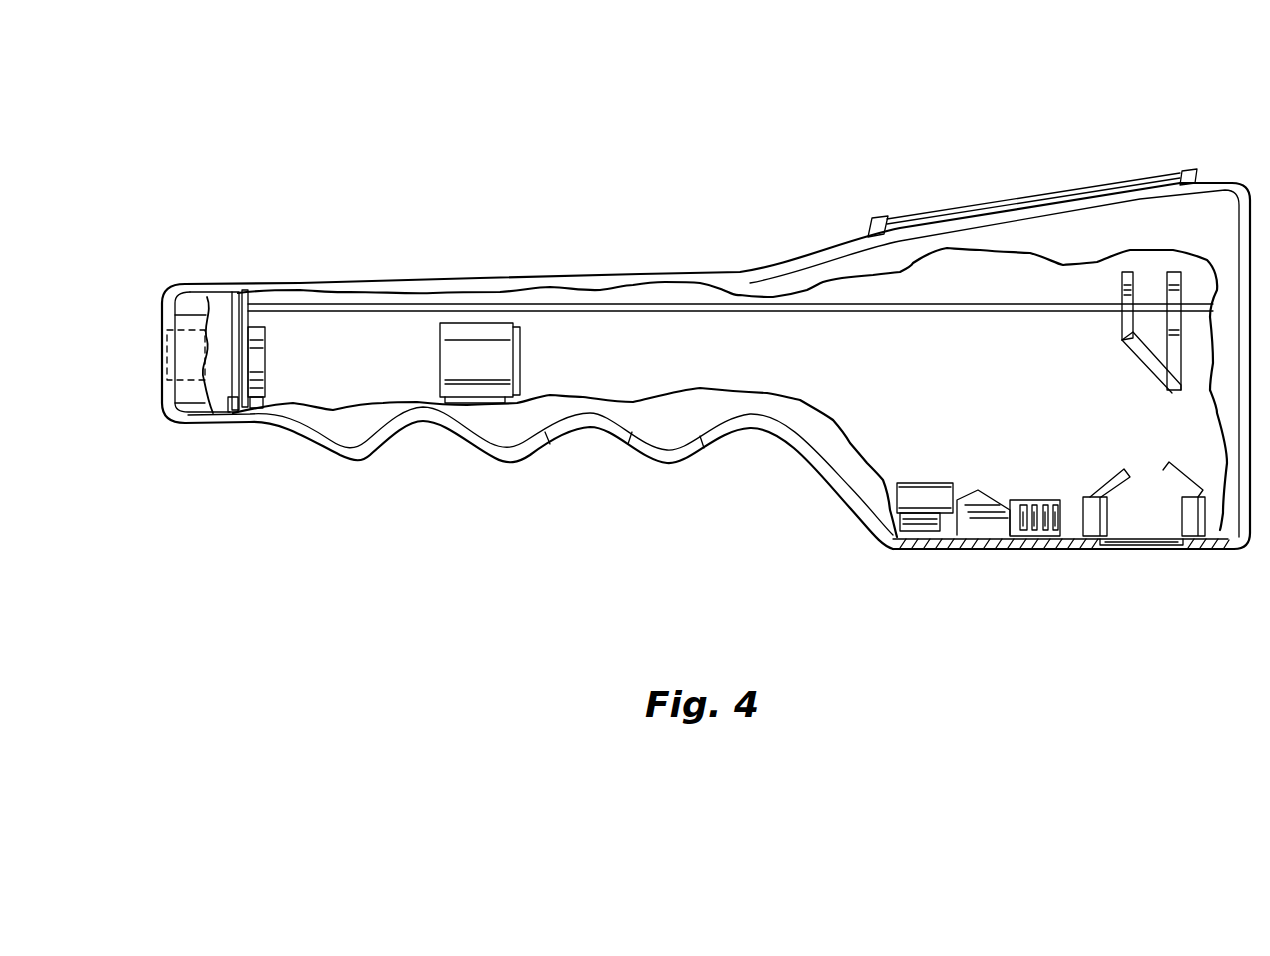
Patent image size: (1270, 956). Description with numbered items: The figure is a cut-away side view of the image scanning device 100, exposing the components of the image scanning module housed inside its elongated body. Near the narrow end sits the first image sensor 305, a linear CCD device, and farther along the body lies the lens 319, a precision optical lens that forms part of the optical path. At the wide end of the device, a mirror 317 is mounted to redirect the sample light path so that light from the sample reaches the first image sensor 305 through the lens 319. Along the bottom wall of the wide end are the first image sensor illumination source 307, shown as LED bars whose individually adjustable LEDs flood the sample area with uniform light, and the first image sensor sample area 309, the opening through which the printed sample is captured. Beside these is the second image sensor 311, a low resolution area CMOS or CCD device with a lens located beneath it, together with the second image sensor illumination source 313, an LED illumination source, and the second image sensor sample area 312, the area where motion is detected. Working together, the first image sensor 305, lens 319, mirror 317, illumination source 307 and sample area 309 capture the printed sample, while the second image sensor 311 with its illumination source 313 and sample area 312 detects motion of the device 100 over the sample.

The handheld device 100 is at (372, 128).
The first image sensor 305 is at (256, 358).
The lens 319 is at (483, 343).
The mirror 317 is at (1140, 358).
The second image sensor illumination source 313 is at (963, 497).
The second image sensor 311 is at (1047, 540).
The second image sensor sample area 312 is at (1013, 549).
The first image sensor illumination source 307 is at (1168, 485).
The first image sensor sample area 309 is at (1147, 550).